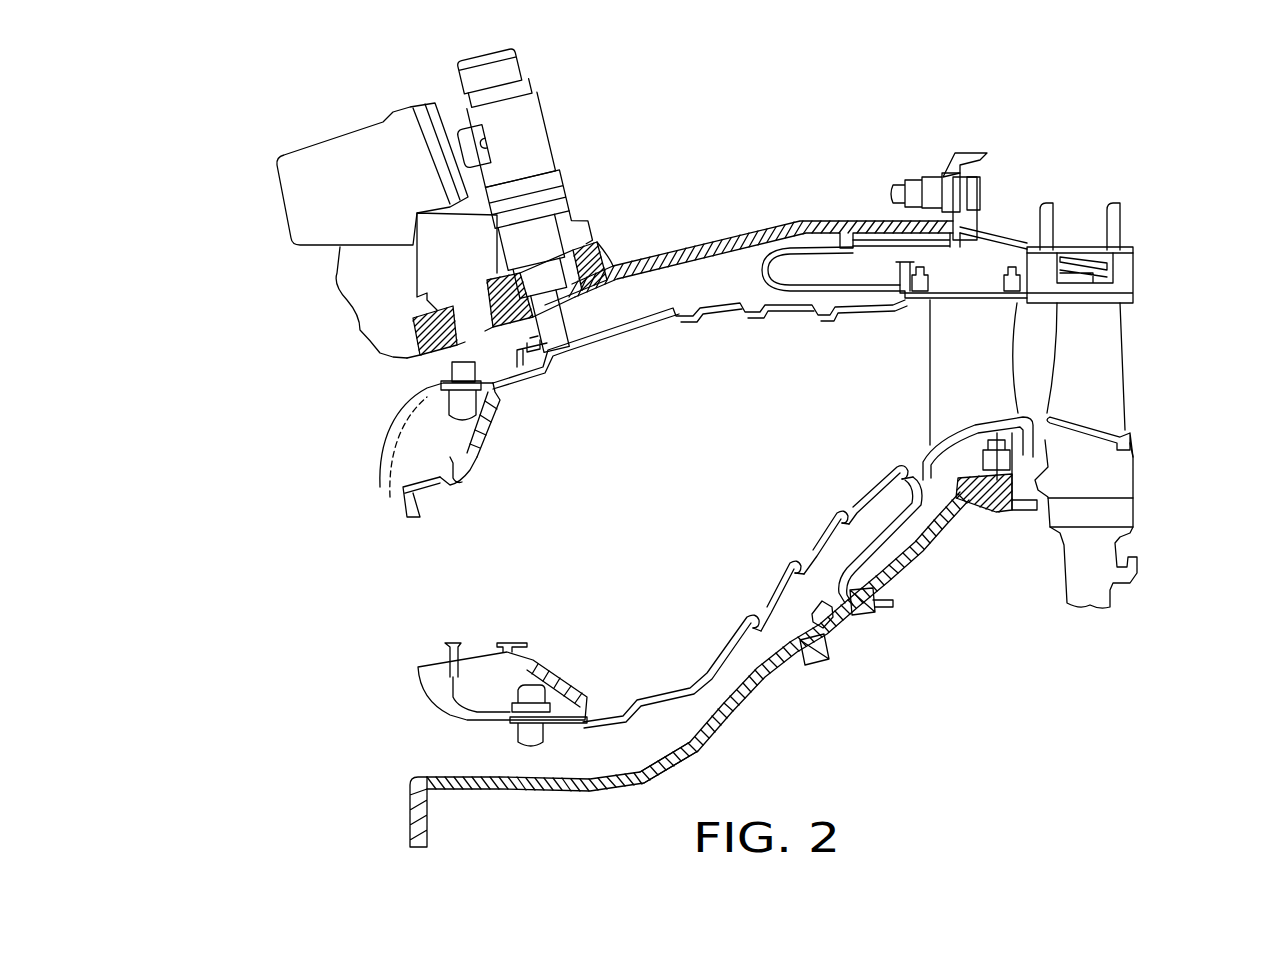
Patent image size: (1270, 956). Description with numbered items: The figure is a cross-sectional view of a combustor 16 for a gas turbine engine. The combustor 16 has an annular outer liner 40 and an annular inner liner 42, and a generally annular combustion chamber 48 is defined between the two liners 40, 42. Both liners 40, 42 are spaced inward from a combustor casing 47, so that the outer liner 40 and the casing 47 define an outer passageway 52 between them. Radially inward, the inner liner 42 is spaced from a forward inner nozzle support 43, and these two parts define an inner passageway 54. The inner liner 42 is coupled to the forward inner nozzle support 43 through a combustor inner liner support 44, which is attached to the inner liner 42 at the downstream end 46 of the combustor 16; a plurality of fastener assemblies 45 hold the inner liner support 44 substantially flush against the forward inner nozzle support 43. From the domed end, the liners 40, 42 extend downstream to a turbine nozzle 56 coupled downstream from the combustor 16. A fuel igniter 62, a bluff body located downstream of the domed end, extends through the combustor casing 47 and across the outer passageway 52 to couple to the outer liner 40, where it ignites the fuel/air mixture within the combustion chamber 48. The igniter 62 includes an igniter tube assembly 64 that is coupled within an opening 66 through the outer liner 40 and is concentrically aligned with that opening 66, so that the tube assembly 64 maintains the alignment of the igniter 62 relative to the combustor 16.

The combustor 16 is at (282, 108).
The fuel igniter 62 is at (568, 218).
The igniter tube assembly 64 is at (575, 295).
The outer passageway 52 is at (660, 288).
The combustor casing 47 is at (767, 229).
The turbine nozzle 56 is at (952, 327).
The annular outer liner 40 is at (724, 315).
The opening 66 is at (560, 372).
The combustion chamber 48 is at (712, 474).
The downstream end 46 is at (1150, 356).
The combustor inner liner support 44 is at (905, 535).
The fastener assembly 45 is at (838, 625).
The annular inner liner 42 is at (737, 628).
The forward inner nozzle support 43 is at (757, 715).
The inner passageway 54 is at (690, 748).